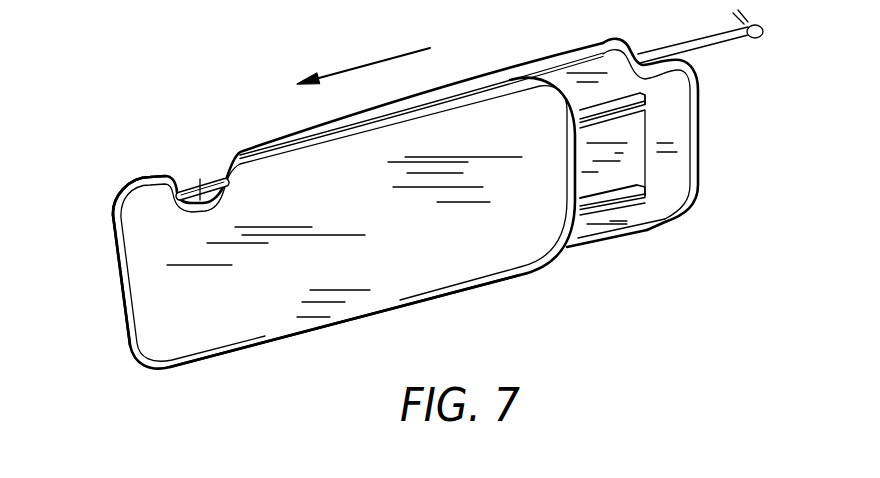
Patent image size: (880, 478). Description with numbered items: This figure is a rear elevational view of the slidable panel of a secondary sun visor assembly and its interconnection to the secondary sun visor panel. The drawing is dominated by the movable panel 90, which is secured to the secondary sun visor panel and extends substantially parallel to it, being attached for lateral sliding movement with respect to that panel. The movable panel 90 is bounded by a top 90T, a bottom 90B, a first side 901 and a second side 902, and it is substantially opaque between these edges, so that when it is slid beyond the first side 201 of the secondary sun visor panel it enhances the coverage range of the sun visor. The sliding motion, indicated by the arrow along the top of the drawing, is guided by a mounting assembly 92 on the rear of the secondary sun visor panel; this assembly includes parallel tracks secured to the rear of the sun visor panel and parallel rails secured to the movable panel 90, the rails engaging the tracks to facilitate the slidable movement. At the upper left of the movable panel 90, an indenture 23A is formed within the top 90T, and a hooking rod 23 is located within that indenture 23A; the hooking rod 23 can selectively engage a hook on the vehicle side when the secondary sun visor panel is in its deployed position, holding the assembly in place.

The hooking rod 23 is at (210, 183).
The indenture 23A is at (197, 188).
The movable panel 90 is at (284, 342).
The top 90T is at (145, 177).
The bottom 90B is at (531, 275).
The first side 901 is at (578, 241).
The second side 902 is at (119, 286).
The mounting assembly 92 is at (645, 165).
The first side 201 is at (698, 128).